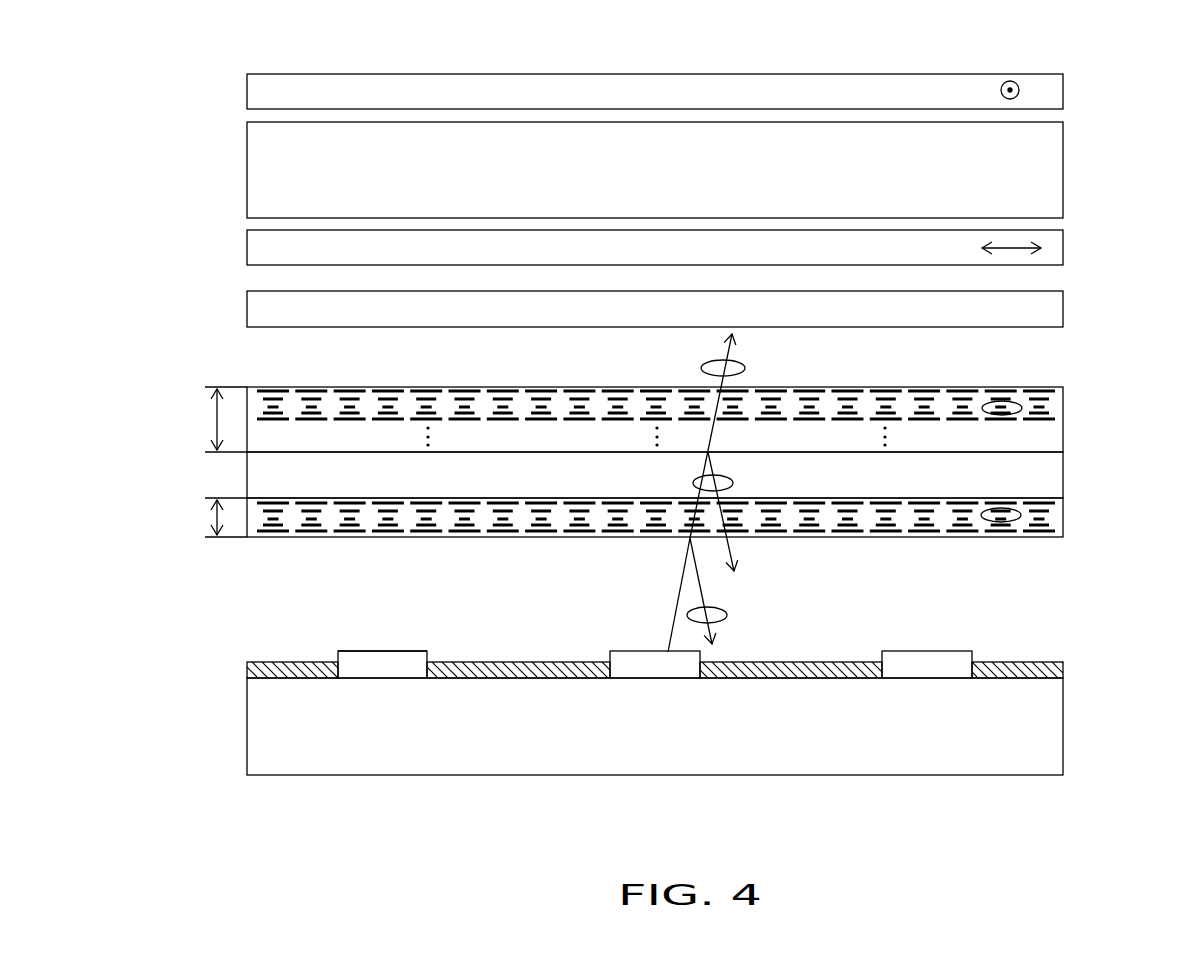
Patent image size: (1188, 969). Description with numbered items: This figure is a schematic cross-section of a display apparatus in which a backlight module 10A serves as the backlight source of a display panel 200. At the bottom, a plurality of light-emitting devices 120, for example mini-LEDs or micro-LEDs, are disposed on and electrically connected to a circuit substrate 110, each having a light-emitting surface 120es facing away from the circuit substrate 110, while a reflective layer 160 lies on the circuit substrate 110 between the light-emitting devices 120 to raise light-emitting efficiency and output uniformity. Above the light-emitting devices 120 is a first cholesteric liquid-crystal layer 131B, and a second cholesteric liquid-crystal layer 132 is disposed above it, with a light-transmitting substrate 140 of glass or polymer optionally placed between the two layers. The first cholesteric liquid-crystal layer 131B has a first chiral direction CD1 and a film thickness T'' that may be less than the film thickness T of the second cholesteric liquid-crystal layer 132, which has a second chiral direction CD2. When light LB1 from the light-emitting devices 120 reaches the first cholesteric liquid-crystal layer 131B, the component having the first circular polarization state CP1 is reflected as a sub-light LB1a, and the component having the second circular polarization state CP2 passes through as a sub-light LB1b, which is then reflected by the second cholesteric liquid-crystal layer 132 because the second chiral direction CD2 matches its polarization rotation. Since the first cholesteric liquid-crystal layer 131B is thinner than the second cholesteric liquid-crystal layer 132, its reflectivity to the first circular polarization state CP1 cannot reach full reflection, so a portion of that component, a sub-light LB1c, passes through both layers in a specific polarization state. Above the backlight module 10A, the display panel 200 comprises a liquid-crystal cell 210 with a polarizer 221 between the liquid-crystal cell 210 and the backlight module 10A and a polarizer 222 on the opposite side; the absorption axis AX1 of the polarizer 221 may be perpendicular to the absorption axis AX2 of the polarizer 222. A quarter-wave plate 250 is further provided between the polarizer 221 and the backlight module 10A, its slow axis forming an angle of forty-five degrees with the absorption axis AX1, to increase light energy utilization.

The display panel 200 is at (573, 169).
The polarizer 222 is at (254, 90).
The liquid-crystal cell 210 is at (260, 175).
The polarizer 221 is at (608, 238).
The absorption axis AX2 is at (1014, 80).
The absorption axis AX1 is at (1014, 248).
The quarter-wave plate 250 is at (1055, 308).
The backlight module 10A is at (632, 555).
The second cholesteric liquid-crystal layer 132 is at (1048, 435).
The light-transmitting substrate 140 is at (1048, 478).
The first cholesteric liquid-crystal layer 131B is at (1055, 522).
The second chiral direction CD2 is at (1014, 412).
The first chiral direction CD1 is at (990, 521).
The film thickness T is at (216, 419).
The film thickness T'' is at (214, 517).
The light LB1 is at (672, 607).
The sub-light LB1a is at (698, 597).
The sub-light LB1b is at (725, 535).
The sub-light LB1c is at (727, 355).
The first circular polarization state CP1 is at (716, 371).
The second circular polarization state CP2 is at (722, 475).
The light-emitting devices 120 is at (930, 658).
The light-emitting surface 120es is at (364, 647).
The reflective layer 160 is at (1050, 668).
The circuit substrate 110 is at (1048, 750).